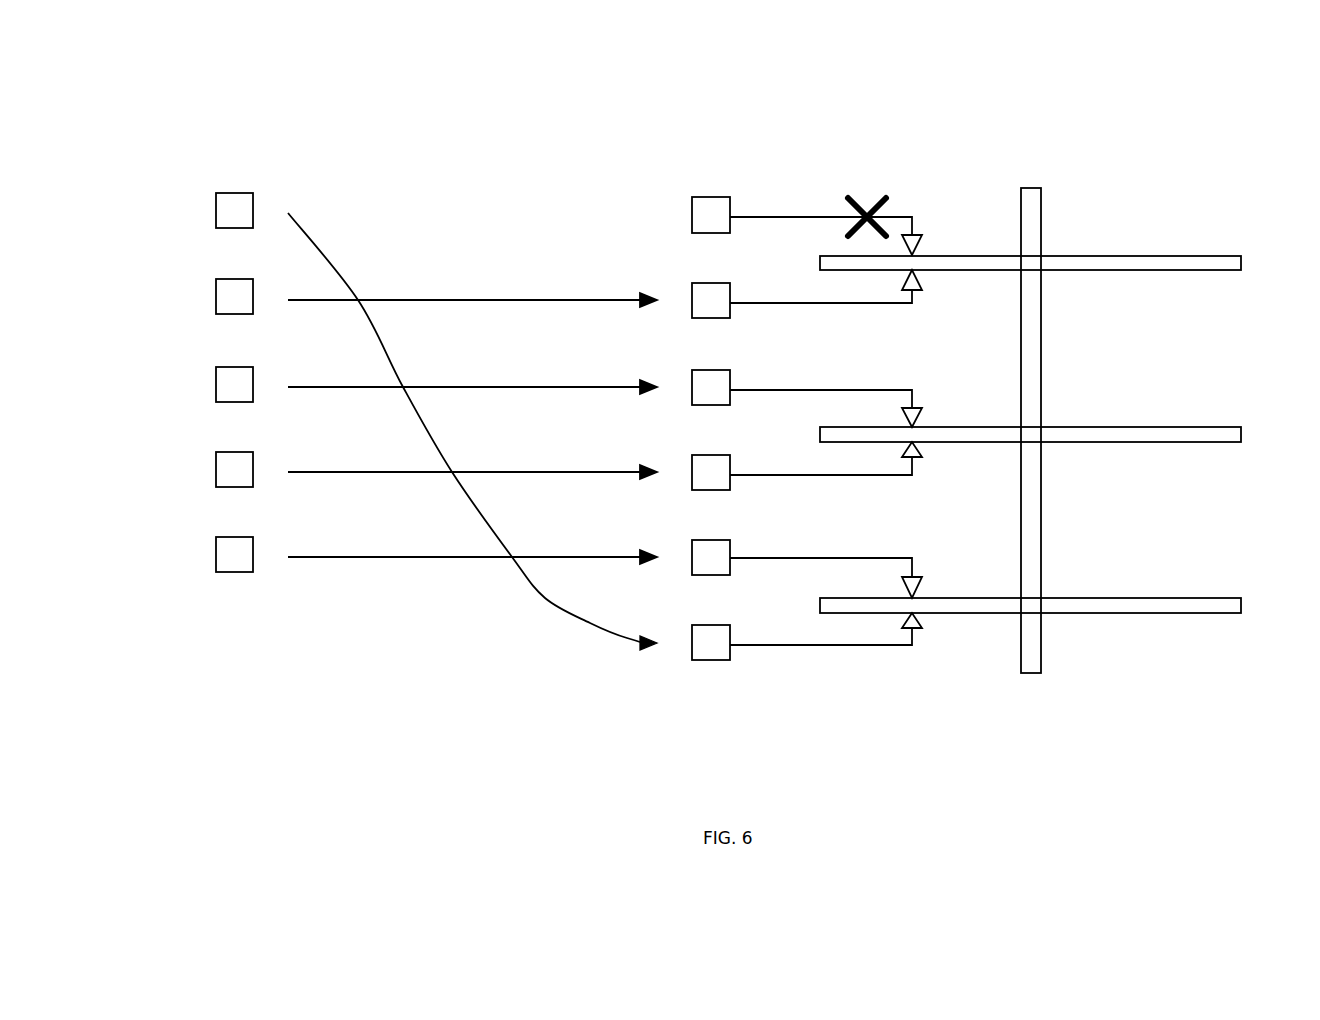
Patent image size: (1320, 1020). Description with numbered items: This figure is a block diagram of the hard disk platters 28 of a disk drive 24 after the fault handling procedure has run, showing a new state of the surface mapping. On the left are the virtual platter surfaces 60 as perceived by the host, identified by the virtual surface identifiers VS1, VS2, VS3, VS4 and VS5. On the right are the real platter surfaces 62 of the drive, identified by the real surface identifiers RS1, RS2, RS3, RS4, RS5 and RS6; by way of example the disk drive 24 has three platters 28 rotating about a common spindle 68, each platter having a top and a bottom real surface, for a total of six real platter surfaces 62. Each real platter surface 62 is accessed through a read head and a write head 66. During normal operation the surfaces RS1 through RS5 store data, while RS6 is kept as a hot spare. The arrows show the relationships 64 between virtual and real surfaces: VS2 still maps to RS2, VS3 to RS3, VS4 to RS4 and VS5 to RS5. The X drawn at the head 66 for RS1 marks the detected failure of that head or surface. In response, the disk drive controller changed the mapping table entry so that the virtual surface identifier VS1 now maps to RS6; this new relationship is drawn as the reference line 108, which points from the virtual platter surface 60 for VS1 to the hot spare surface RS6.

The virtual platter surface 60 is at (214, 122).
The disk drive 24 is at (1243, 143).
The relationship 64 is at (490, 300).
The reference line 108 is at (541, 590).
The read head and write head 66 is at (928, 212).
The real platter surface 62 is at (1098, 212).
The hard disk platter 28 is at (1068, 270).
The spindle 68 is at (1041, 360).
The virtual surface identifier VS1 is at (225, 205).
The virtual surface identifier VS2 is at (225, 291).
The virtual surface identifier VS3 is at (225, 379).
The virtual surface identifier VS4 is at (225, 464).
The virtual surface identifier VS5 is at (225, 549).
The real surface identifier RS1 is at (700, 209).
The real surface identifier RS2 is at (700, 295).
The real surface identifier RS3 is at (700, 382).
The real surface identifier RS4 is at (700, 467).
The real surface identifier RS5 is at (700, 552).
The real surface identifier RS6 is at (700, 637).